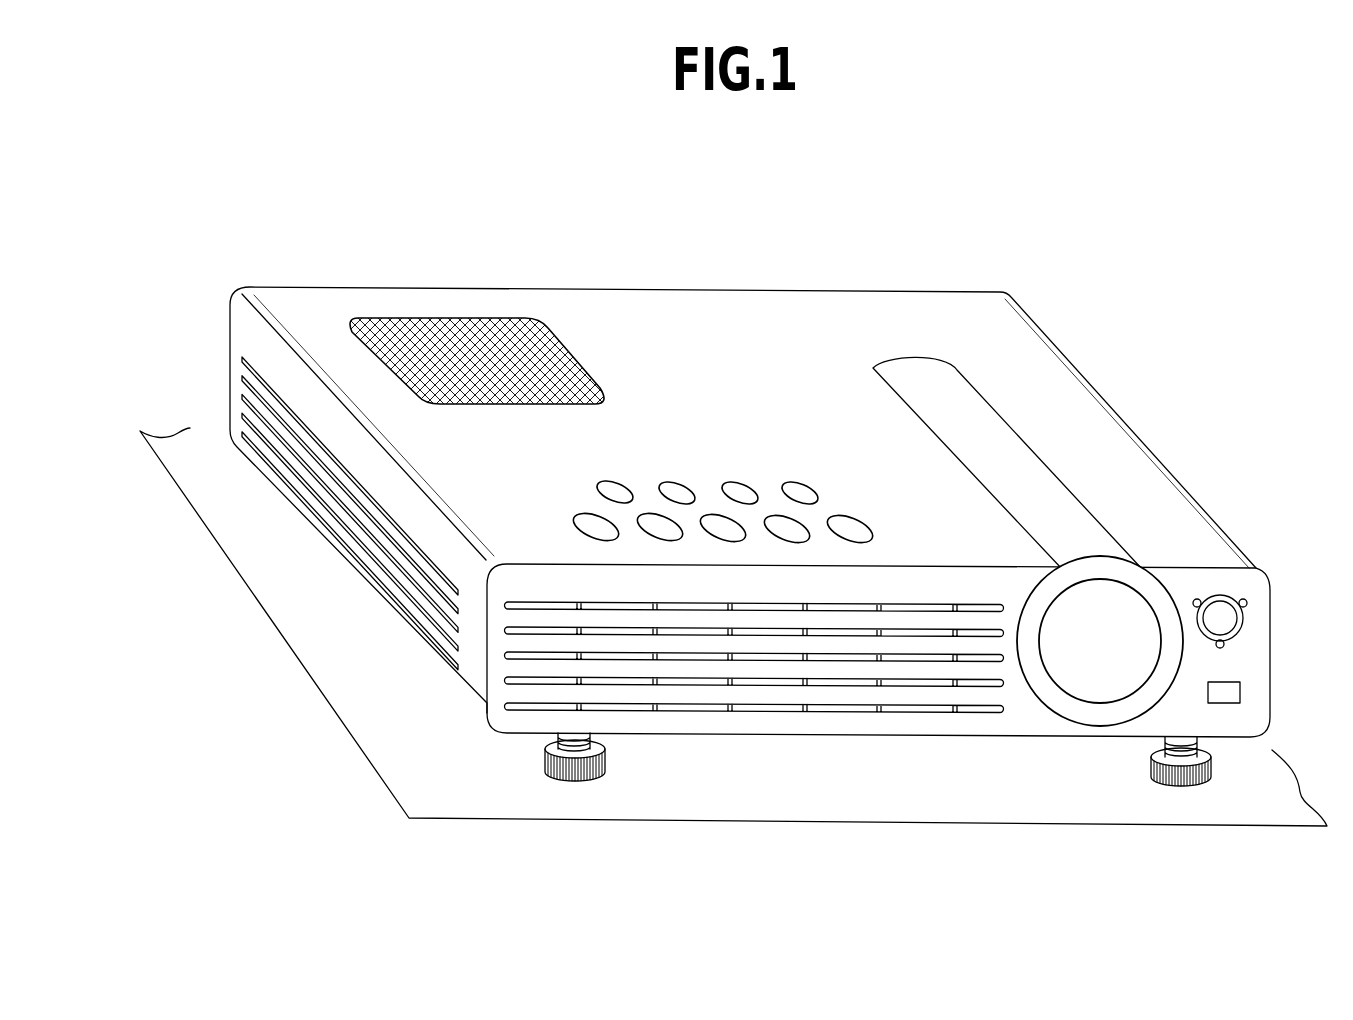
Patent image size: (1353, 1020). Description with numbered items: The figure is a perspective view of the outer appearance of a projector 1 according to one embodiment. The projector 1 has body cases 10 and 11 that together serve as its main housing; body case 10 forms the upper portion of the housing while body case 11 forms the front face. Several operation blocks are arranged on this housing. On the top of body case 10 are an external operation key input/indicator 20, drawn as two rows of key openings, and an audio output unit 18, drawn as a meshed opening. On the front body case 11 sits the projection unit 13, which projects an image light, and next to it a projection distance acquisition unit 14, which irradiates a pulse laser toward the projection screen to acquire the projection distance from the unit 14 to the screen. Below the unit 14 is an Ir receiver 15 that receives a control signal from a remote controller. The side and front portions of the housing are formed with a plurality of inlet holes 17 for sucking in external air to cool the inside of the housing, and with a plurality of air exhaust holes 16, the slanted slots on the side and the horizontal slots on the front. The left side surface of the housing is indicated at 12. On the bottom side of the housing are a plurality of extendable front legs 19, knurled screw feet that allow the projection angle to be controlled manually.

The projector 1 is at (320, 237).
The body case 10 is at (717, 355).
The body case 11 is at (872, 718).
The side face of housing 12 is at (320, 530).
The projection unit 13 is at (1088, 675).
The projection distance acquisition unit 14 is at (1232, 617).
The Ir receiver 15 is at (1240, 692).
The air exhaust hole 16 is at (715, 700).
The inlet hole 17 is at (262, 440).
The audio output unit 18 is at (452, 355).
The extendable front leg 19 is at (590, 772).
The external operation key input/indicator 20 is at (690, 468).